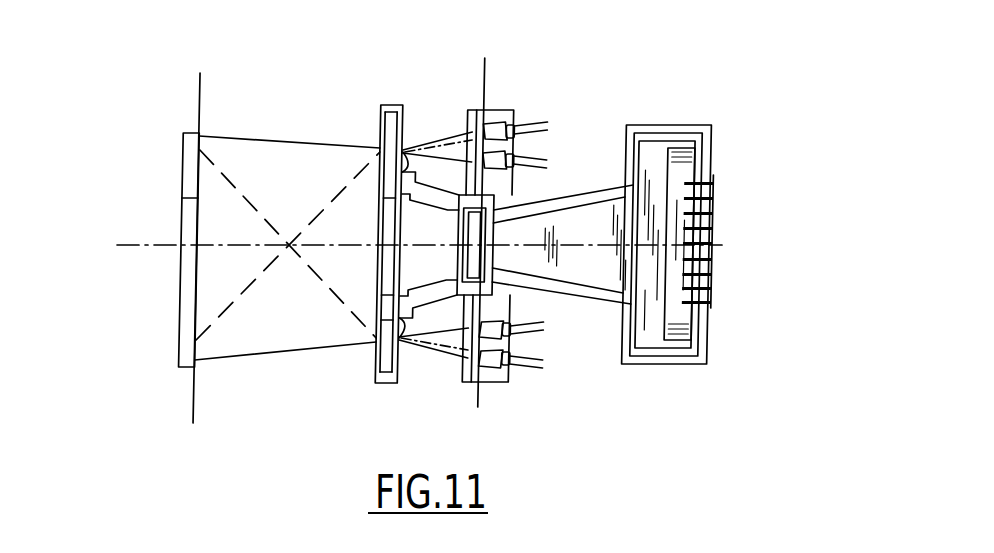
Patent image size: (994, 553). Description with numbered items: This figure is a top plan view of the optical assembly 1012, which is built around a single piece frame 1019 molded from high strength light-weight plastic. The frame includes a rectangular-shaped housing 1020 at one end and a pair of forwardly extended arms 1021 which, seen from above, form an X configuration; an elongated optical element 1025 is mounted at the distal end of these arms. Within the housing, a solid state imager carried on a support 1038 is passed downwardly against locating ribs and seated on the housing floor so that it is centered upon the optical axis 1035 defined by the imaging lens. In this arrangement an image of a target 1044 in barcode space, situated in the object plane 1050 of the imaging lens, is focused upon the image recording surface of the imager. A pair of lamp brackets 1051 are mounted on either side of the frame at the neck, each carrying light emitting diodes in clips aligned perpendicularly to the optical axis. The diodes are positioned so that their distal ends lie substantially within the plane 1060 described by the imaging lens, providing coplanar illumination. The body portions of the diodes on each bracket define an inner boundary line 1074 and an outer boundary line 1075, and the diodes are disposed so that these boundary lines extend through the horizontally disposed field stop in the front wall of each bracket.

The optical assembly 1012 is at (681, 93).
The single piece frame 1019 is at (354, 382).
The housing 1020 is at (700, 124).
The arms 1021 is at (590, 192).
The optical element 1025 is at (377, 134).
The optical axis 1035 is at (160, 248).
The support 1038 is at (675, 347).
The target 1044 is at (182, 198).
The object plane 1050 is at (201, 100).
The lamp brackets 1051 is at (516, 110).
The plane 1060 is at (481, 58).
The inner boundary line 1074 is at (403, 150).
The outer boundary line 1075 is at (425, 133).